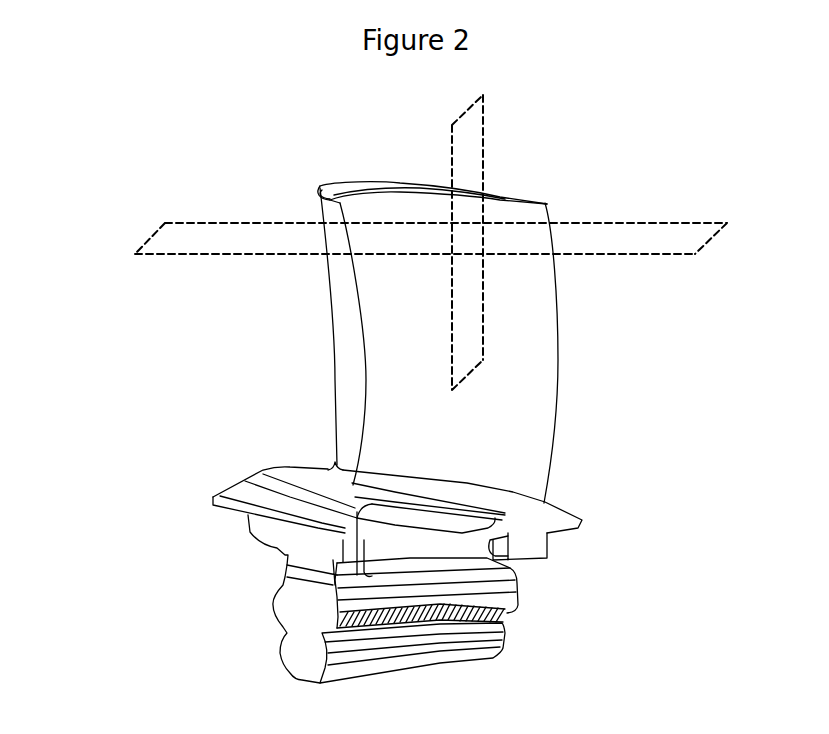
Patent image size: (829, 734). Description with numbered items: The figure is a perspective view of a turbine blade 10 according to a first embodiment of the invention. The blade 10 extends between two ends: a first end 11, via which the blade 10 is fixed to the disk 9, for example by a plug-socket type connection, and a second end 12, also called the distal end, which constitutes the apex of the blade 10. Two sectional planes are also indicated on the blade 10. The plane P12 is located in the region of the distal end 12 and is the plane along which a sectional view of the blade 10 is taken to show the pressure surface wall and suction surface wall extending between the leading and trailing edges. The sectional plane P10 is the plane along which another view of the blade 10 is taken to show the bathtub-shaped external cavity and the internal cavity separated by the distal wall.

The disk 9 is at (283, 477).
The turbine blade 10 is at (493, 431).
The first end 11 is at (555, 505).
The second end 12 is at (326, 184).
The sectional plane P10 is at (470, 147).
The plane P12 is at (675, 236).